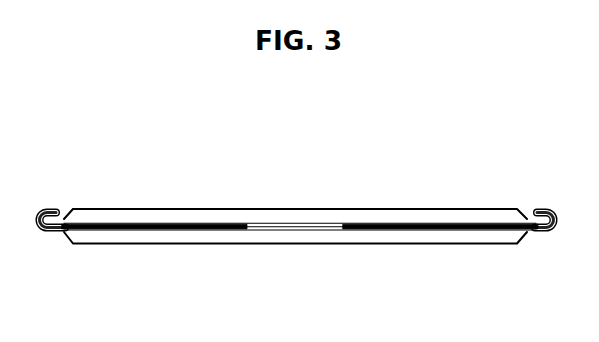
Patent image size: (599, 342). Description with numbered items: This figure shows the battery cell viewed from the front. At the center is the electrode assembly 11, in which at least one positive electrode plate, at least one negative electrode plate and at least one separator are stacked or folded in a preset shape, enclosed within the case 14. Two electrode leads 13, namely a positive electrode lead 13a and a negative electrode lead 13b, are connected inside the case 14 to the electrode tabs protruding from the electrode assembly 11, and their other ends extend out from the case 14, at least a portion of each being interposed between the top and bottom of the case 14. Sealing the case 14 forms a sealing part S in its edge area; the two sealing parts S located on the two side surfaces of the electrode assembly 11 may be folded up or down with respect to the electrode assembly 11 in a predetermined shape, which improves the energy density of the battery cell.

The electrode assembly 11 is at (304, 237).
The electrode lead 13 is at (300, 175).
The positive electrode lead 13a is at (203, 223).
The negative electrode lead 13b is at (440, 199).
The case 14 is at (418, 244).
The sealing part S is at (48, 232).